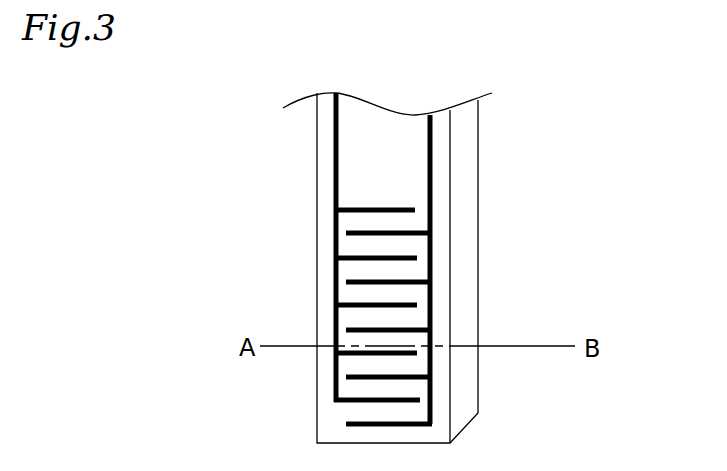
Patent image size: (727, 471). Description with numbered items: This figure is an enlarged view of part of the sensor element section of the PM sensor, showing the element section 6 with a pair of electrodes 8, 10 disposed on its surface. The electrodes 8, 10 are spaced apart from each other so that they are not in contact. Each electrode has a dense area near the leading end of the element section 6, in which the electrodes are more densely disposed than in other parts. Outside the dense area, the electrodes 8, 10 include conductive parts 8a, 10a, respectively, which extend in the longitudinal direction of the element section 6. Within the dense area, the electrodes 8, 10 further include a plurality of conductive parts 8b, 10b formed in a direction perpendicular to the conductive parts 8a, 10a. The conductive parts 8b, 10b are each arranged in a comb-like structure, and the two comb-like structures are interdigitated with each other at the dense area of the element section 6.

The element section 6 is at (480, 127).
The electrode 8 is at (329, 247).
The conductive part 8a is at (330, 135).
The conductive parts 8b is at (355, 302).
The electrode 10 is at (456, 269).
The conductive part 10a is at (433, 142).
The conductive parts 10b is at (402, 329).